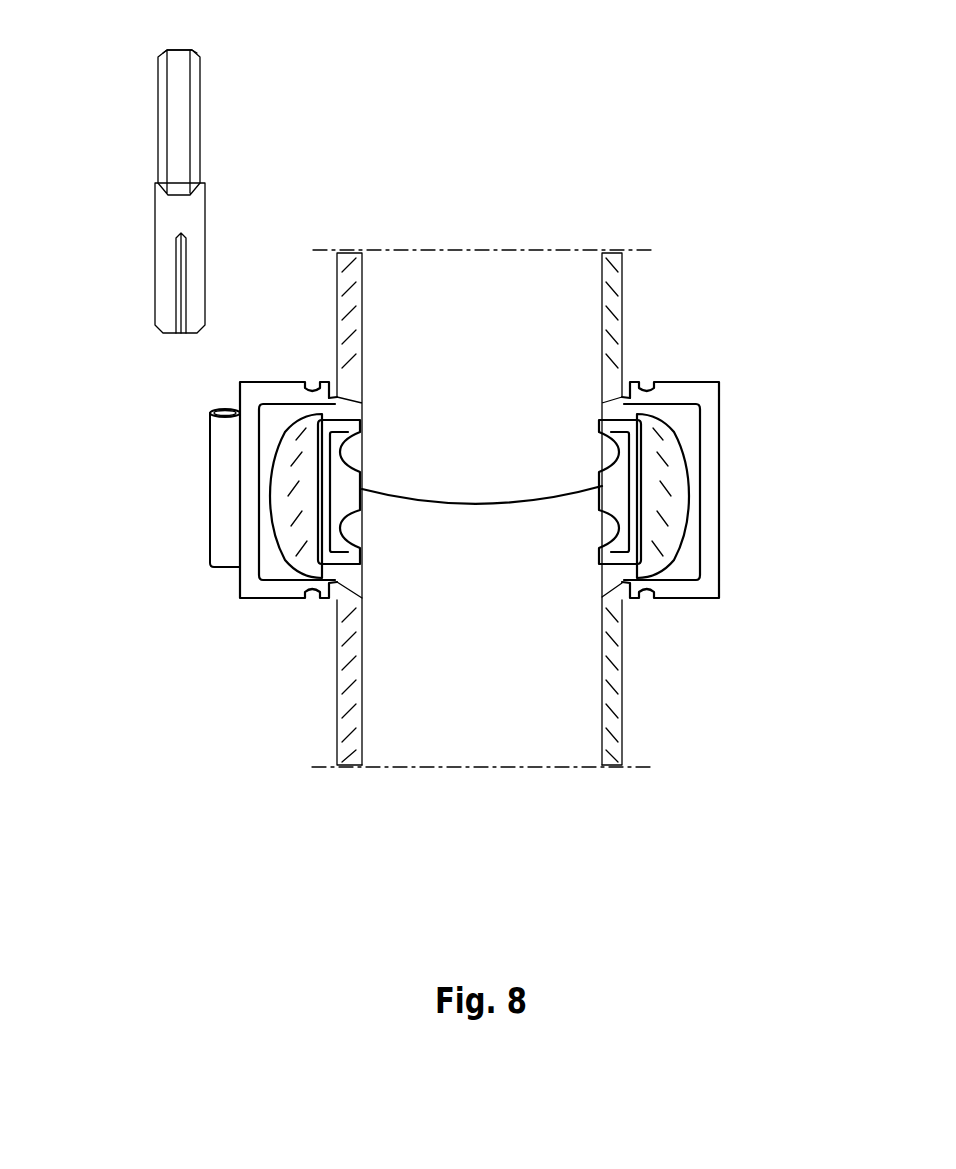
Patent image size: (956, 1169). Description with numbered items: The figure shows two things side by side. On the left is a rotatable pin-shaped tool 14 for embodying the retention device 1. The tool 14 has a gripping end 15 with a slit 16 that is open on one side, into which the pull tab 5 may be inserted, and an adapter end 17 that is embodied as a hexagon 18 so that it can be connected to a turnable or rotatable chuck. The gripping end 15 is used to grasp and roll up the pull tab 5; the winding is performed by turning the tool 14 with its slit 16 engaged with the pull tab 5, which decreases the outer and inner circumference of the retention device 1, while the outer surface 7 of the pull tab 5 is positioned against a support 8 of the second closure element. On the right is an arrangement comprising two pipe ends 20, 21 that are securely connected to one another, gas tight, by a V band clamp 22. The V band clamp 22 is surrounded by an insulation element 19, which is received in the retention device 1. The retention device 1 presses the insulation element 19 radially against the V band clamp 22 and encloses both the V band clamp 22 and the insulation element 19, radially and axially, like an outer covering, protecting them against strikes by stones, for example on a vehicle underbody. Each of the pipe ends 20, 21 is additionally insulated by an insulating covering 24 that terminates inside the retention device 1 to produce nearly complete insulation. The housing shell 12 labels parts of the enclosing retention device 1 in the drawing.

The retention device 1 is at (720, 398).
The pull tab 5 is at (210, 498).
The outer surface 7 is at (225, 535).
The support 8 is at (238, 588).
The housing shell 12 is at (692, 393).
The tool 14 is at (132, 152).
The gripping end 15 is at (168, 305).
The slit 16 is at (180, 338).
The adapter end 17 is at (182, 104).
The hexagon 18 is at (180, 55).
The insulation element 19 is at (654, 440).
The pipe end 20 is at (480, 313).
The pipe end 21 is at (423, 662).
The V band clamp 22 is at (630, 565).
The insulating covering 24 is at (613, 717).